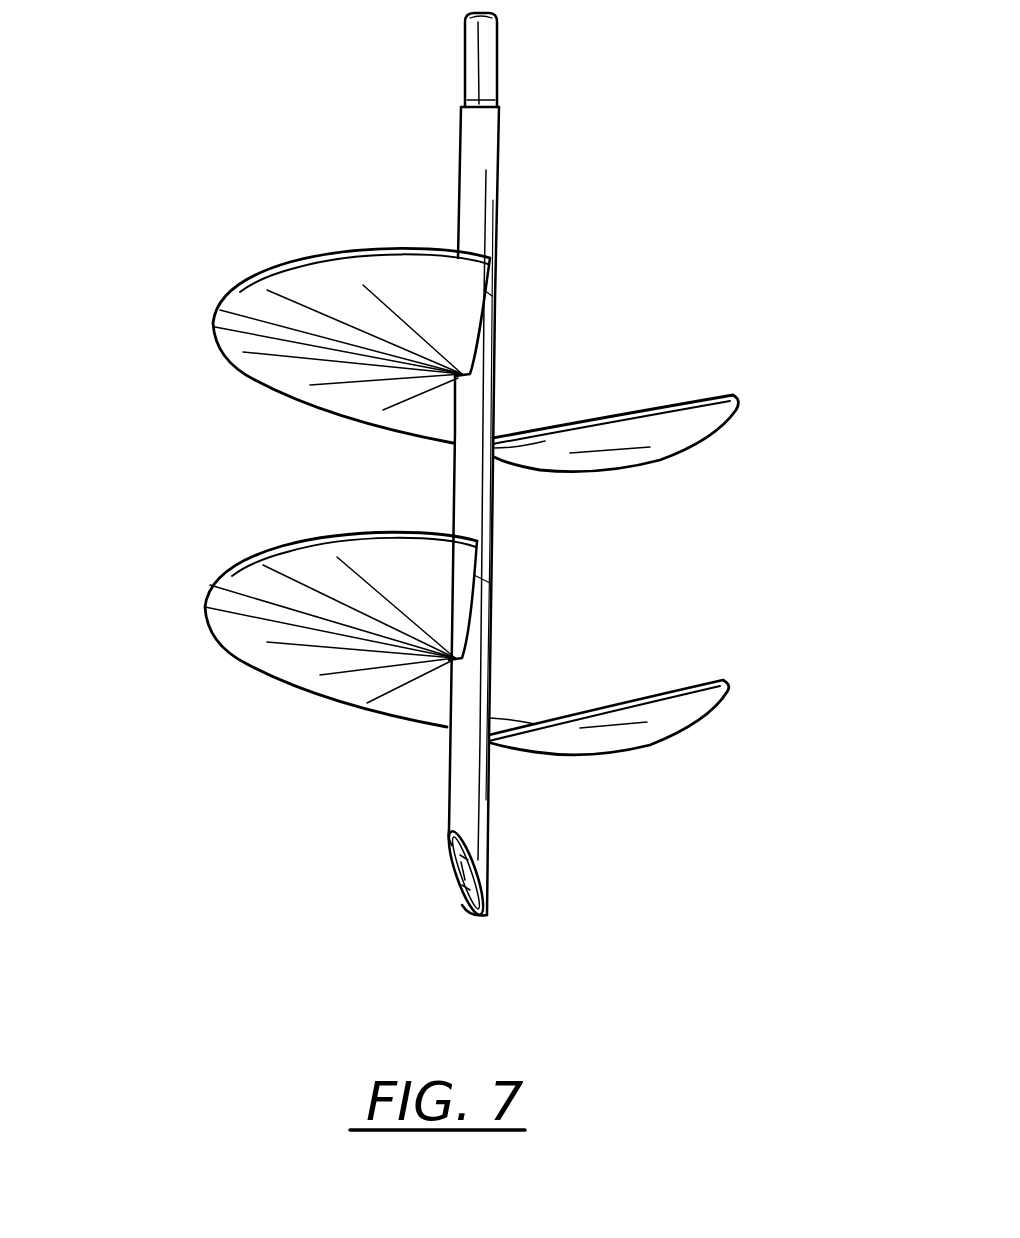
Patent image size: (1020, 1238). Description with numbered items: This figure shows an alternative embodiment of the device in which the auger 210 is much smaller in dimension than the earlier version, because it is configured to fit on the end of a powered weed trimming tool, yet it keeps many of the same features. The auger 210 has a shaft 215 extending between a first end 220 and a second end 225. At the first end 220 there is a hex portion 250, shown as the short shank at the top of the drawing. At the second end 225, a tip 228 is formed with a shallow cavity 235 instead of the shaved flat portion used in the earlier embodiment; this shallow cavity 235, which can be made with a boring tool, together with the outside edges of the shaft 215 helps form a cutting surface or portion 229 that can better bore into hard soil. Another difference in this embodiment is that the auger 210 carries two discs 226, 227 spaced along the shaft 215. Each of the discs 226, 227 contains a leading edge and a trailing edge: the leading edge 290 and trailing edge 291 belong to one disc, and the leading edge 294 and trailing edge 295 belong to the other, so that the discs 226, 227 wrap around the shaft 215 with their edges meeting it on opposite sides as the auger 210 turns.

The auger 210 is at (760, 269).
The shaft 215 is at (502, 158).
The first end 220 is at (500, 110).
The second end 225 is at (493, 786).
The disc 226 is at (207, 297).
The disc 227 is at (192, 584).
The tip 228 is at (490, 878).
The cutting surface or portion 229 is at (470, 912).
The shallow cavity 235 is at (452, 872).
The hex portion 250 is at (471, 52).
The leading edge 290 is at (697, 397).
The trailing edge 291 is at (684, 683).
The leading edge 294 is at (497, 281).
The trailing edge 295 is at (492, 588).